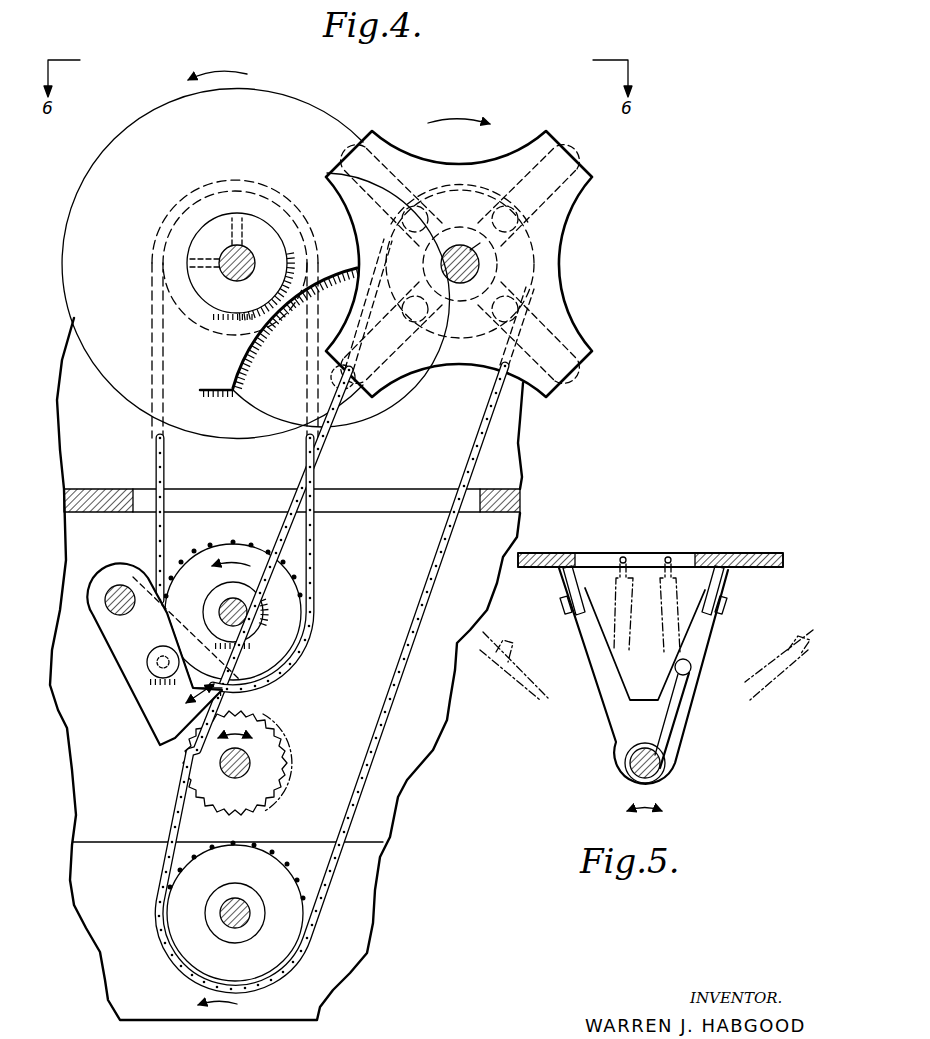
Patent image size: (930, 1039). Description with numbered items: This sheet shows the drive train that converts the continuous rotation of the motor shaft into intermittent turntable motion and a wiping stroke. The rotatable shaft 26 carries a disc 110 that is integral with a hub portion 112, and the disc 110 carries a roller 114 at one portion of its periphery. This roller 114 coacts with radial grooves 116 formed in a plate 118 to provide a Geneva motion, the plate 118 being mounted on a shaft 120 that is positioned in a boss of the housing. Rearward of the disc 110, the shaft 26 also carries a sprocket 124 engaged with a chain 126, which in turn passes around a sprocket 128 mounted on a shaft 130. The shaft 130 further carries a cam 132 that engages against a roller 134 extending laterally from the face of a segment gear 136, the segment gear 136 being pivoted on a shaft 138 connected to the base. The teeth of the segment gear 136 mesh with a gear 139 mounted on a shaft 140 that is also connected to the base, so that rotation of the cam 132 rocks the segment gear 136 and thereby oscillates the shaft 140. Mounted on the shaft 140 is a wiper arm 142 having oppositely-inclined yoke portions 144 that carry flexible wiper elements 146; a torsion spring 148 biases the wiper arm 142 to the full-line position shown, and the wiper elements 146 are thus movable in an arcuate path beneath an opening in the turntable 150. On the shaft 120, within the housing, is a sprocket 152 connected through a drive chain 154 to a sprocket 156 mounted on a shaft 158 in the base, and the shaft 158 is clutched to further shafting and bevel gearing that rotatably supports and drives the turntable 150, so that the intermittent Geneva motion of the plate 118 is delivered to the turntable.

In FIG. 4, the rotatable shaft 26 is at (250, 262).
In FIG. 4, the disc 110 is at (124, 138).
In FIG. 4, the hub portion 112 is at (258, 155).
In FIG. 4, the roller 114 is at (332, 372).
In FIG. 4, the radial grooves 116 is at (572, 334).
In FIG. 4, the plate 118 is at (512, 158).
In FIG. 4, the shaft 120 is at (463, 285).
In FIG. 4, the sprocket 124 is at (201, 204).
In FIG. 4, the chain 126 is at (164, 463).
In FIG. 4, the sprocket 128 is at (282, 660).
In FIG. 4, the shaft 130 is at (226, 608).
In FIG. 4, the cam 132 is at (292, 612).
In FIG. 4, the roller 134 is at (156, 676).
In FIG. 4, the segment gear 136 is at (121, 652).
In FIG. 4, the shaft 138 is at (111, 585).
In FIG. 4, the gear 139 is at (276, 742).
In FIG. 4, the shaft 140 is at (224, 768).
In FIG. 5, the shaft 140 is at (631, 780).
In FIG. 5, the wiper arm 142 is at (616, 732).
In FIG. 5, the yoke portions 144 is at (591, 638).
In FIG. 5, the flexible wiper elements 146 is at (561, 581).
In FIG. 5, the torsion spring 148 is at (675, 553).
In FIG. 5, the turntable 150 is at (557, 552).
In FIG. 4, the sprocket 152 is at (552, 232).
In FIG. 4, the drive chain 154 is at (393, 742).
In FIG. 4, the sprocket 156 is at (280, 847).
In FIG. 4, the shaft 158 is at (233, 897).